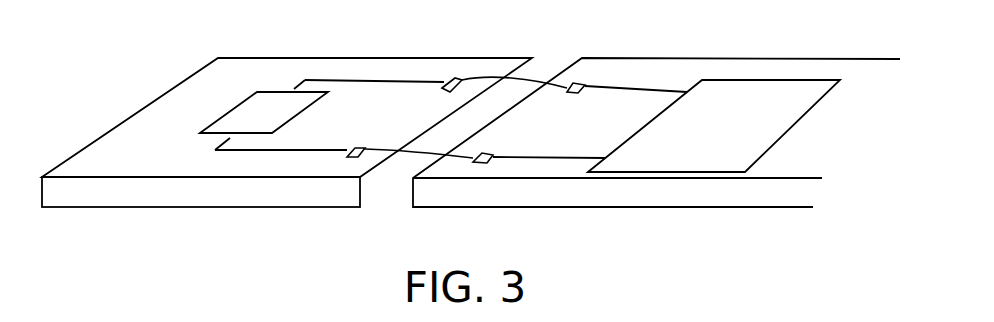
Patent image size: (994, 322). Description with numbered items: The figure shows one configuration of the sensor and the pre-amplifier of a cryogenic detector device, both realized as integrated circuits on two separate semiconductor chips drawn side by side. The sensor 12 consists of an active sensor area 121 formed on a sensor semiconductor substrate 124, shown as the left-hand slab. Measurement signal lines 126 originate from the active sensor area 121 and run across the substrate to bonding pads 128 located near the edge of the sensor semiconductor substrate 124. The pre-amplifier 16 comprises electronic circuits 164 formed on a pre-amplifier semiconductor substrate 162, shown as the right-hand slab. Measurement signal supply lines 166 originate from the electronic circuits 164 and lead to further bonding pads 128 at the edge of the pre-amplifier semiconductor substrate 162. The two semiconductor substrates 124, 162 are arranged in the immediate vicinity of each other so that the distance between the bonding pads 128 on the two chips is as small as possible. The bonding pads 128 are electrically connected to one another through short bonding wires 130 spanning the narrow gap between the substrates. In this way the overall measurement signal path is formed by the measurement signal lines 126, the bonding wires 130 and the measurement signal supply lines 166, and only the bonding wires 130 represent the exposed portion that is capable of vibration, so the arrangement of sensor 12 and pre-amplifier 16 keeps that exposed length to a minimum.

The sensor 12 is at (287, 117).
The pre-amplifier 16 is at (656, 132).
The active sensor area 121 is at (271, 99).
The sensor semiconductor substrate 124 is at (198, 200).
The measurement signal lines 126 is at (320, 150).
The bonding pads 128 is at (365, 148).
The bonding wires 130 is at (541, 85).
The pre-amplifier semiconductor substrate 162 is at (603, 201).
The electronic circuits 164 is at (698, 133).
The measurement signal supply lines 166 is at (562, 158).